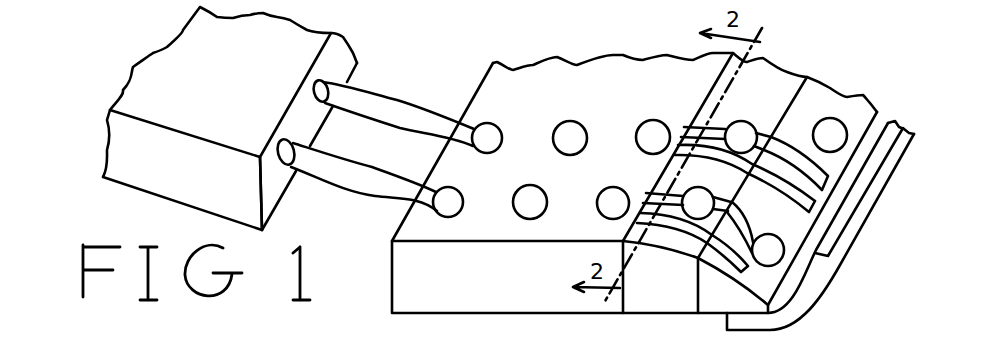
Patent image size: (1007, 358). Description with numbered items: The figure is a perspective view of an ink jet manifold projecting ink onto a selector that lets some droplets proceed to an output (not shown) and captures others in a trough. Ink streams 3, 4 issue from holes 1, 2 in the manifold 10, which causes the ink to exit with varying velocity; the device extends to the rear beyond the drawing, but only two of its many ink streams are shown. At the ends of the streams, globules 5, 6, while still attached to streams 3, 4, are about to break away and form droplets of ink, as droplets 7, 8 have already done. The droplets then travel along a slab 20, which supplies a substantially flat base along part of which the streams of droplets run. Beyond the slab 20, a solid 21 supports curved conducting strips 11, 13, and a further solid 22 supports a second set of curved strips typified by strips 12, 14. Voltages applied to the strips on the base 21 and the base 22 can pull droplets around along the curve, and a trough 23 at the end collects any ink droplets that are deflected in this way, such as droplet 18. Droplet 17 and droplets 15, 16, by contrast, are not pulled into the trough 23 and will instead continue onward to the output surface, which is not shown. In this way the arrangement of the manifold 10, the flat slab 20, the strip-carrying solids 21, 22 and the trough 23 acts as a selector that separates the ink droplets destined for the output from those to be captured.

The hole 1 is at (316, 85).
The hole 2 is at (280, 147).
The ink stream 3 is at (398, 114).
The ink stream 4 is at (364, 177).
The globule 5 is at (487, 138).
The globule 6 is at (448, 202).
The droplet 7 is at (653, 137).
The droplet 8 is at (613, 203).
The manifold 10 is at (230, 118).
The curved conducting strip 11 is at (682, 188).
The curved strip 12 is at (741, 215).
The curved conducting strip 13 is at (692, 227).
The curved strip 14 is at (745, 247).
The droplet 15 is at (741, 137).
The droplet 16 is at (698, 203).
The droplet 17 is at (830, 135).
The droplet 18 is at (768, 250).
The slab 20 is at (507, 277).
The solid 21 is at (660, 277).
The solid 22 is at (733, 285).
The trough 23 is at (819, 303).